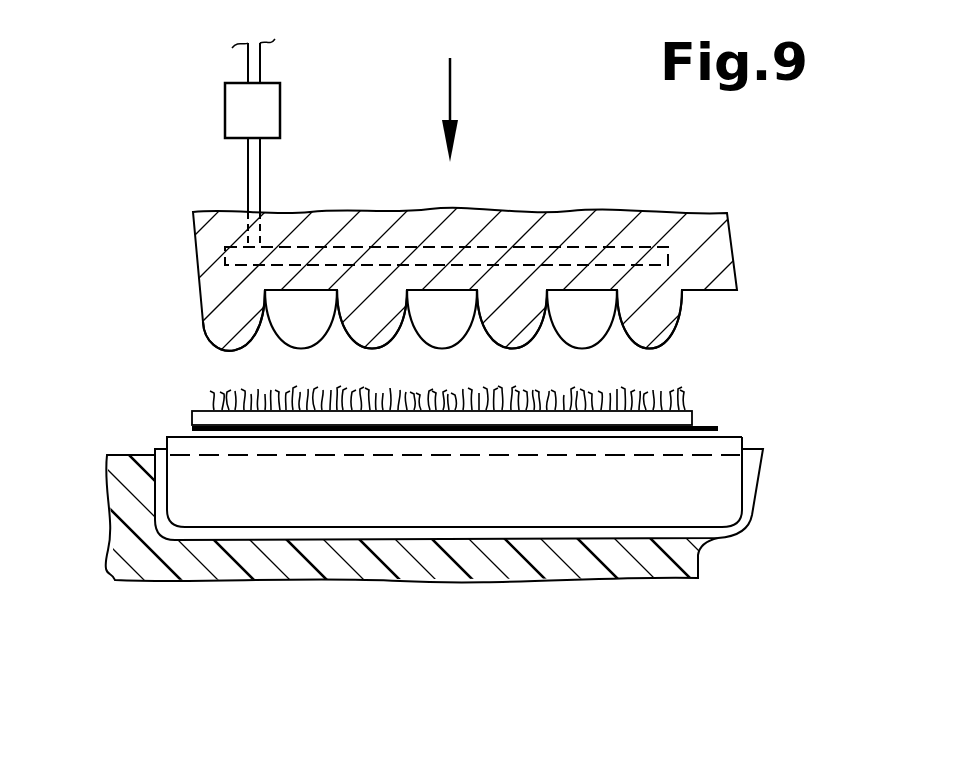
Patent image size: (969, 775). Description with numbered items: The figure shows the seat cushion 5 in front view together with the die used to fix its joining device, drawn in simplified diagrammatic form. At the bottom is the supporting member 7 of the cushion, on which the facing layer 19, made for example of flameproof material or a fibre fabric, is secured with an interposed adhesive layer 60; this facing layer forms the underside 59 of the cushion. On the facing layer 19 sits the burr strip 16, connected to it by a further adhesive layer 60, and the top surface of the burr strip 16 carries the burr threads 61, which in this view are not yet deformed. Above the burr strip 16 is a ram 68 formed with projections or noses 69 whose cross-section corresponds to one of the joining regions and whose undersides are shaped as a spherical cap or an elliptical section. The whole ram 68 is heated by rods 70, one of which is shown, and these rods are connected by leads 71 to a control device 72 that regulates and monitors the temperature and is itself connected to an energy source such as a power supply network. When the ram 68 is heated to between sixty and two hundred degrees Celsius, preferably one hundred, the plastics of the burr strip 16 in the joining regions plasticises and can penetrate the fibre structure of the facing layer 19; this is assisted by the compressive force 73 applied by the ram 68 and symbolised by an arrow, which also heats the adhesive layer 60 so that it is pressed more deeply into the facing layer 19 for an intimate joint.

The seat cushion 5 is at (429, 525).
The supporting member 7 is at (595, 573).
The burr strip 16 is at (694, 415).
The facing layer 19 is at (705, 482).
The underside 59 is at (127, 448).
The adhesive layer 60 is at (193, 430).
The burr threads 61 is at (236, 392).
The ram 68 is at (700, 232).
The projections 69 is at (227, 330).
The rods 70 is at (362, 252).
The leads 71 is at (262, 177).
The control device 72 is at (236, 117).
The compressive force 73 is at (455, 96).